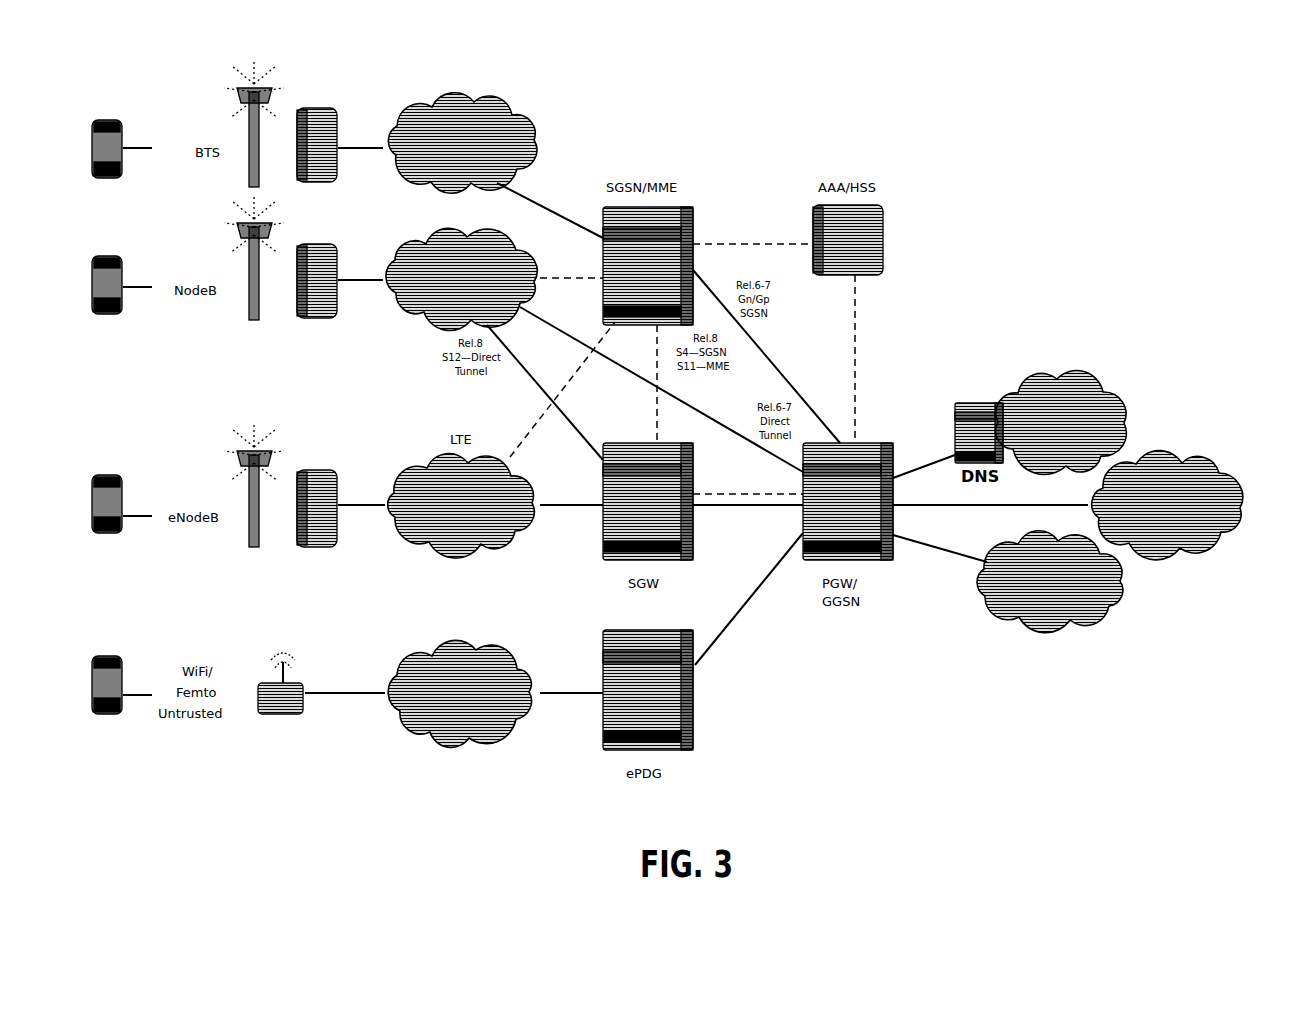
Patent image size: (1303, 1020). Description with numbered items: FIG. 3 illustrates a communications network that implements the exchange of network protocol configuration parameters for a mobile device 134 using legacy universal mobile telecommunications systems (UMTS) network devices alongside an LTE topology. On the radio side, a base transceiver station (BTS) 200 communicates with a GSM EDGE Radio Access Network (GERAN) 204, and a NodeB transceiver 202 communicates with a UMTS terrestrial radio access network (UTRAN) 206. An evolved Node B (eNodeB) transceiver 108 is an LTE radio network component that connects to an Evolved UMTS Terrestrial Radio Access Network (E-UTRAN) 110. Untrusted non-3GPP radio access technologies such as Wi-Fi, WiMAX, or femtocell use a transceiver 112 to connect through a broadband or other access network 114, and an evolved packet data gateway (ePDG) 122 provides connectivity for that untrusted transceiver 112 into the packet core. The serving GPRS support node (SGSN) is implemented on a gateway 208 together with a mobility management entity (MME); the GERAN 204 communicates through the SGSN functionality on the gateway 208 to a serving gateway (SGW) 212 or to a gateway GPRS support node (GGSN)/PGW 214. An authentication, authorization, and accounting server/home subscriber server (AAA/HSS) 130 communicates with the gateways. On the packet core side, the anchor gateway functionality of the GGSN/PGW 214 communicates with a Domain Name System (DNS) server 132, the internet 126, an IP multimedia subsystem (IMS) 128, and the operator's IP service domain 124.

The mobile device (user equipment) 134 is at (93, 121).
The base transceiver station (BTS) 200 is at (318, 112).
The NodeB transceiver 202 is at (330, 254).
The evolved Node B (eNodeB) transceiver 108 is at (325, 472).
The GSM EDGE Radio Access Network (GERAN) 204 is at (491, 113).
The UMTS terrestrial radio access network (UTRAN) 206 is at (491, 253).
The Evolved UMTS Terrestrial Radio Access Network (E-UTRAN) 110 is at (405, 476).
The transceiver 112 is at (303, 692).
The WiFi/Femto/Other access network 114 is at (519, 671).
The gateway 208 is at (690, 213).
The serving gateway (SGW) 212 is at (694, 491).
The gateway GPRS support node (GGSN)/PGW 214 is at (860, 444).
The evolved packet data gateway (ePDG) 122 is at (688, 632).
The AAA server/home subscriber server (HSS) 130 is at (883, 216).
The Domain Name System (DNS) server 132 is at (958, 404).
The internet 126 is at (1110, 401).
The IP multimedia subsystem (IMS) 128 is at (1218, 476).
The operator's IP service domain 124 is at (1110, 613).